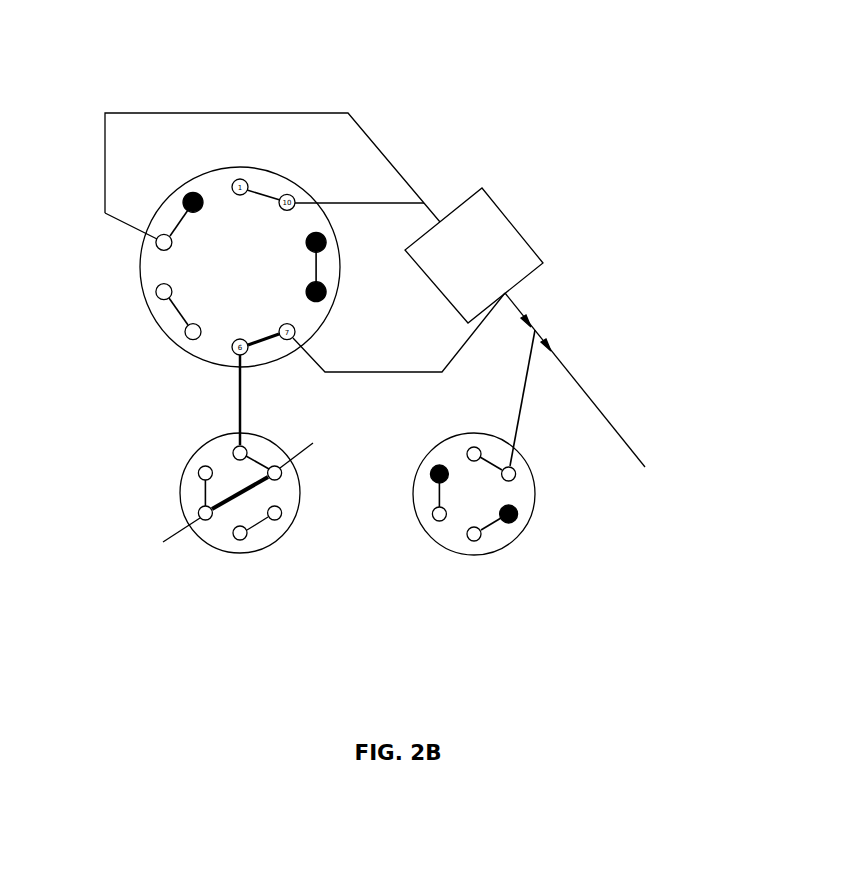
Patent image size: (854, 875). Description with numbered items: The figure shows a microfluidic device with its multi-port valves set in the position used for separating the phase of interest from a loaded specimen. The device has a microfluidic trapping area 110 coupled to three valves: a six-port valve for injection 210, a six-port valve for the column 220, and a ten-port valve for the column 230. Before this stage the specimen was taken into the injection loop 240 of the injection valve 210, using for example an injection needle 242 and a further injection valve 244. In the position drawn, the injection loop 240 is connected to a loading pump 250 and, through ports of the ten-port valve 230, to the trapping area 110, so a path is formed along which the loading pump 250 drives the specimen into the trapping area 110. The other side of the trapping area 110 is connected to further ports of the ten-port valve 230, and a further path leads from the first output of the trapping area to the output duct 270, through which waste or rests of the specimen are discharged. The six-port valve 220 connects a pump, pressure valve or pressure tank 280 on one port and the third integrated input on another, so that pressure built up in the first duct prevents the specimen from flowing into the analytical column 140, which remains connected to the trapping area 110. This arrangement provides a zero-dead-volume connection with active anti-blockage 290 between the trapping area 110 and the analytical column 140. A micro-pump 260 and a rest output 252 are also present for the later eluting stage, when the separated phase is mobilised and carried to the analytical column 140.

The microfluidic trapping area 110 is at (474, 255).
The analytical column 140 is at (602, 412).
The six-port valve for injection 210 is at (223, 620).
The six-port valve for the column 220 is at (471, 612).
The ten-port valve for the column 230 is at (247, 72).
The injection loop 240 is at (240, 499).
The injection needle 242 is at (280, 518).
The injection valve 244 is at (240, 540).
The loading pump 250 is at (200, 468).
The rest output 252 is at (184, 339).
The micro-pump 260 is at (150, 296).
The output duct 270 is at (240, 179).
The pressure tank 280 is at (474, 447).
The zero-dead-volume connection with active anti-blockage 290 is at (562, 381).